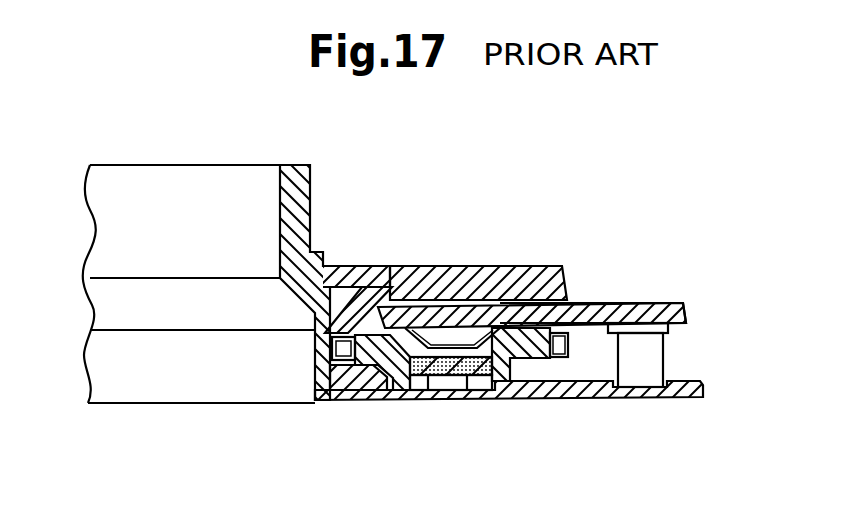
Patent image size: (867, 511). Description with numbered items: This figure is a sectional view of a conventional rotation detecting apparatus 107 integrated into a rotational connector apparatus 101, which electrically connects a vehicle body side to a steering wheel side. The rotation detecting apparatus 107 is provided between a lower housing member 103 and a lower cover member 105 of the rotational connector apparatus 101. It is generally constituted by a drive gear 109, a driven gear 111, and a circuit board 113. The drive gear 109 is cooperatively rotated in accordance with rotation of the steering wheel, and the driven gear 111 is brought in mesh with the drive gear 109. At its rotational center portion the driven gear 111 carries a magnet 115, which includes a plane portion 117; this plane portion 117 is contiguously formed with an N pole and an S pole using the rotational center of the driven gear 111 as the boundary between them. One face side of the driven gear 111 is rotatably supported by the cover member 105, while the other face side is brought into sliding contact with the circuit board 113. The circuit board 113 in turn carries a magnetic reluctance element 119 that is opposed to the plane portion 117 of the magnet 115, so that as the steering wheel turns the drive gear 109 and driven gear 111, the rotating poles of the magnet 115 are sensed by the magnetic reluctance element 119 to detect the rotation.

The rotational connector apparatus 101 is at (341, 178).
The lower housing member 103 is at (502, 300).
The lower cover member 105 is at (563, 402).
The rotation detecting apparatus 107 is at (588, 275).
The drive gear 109 is at (348, 402).
The driven gear 111 is at (512, 402).
The circuit board 113 is at (683, 304).
The magnet 115 is at (430, 402).
The plane portion 117 is at (472, 402).
The magnetic reluctance element 119 is at (448, 328).